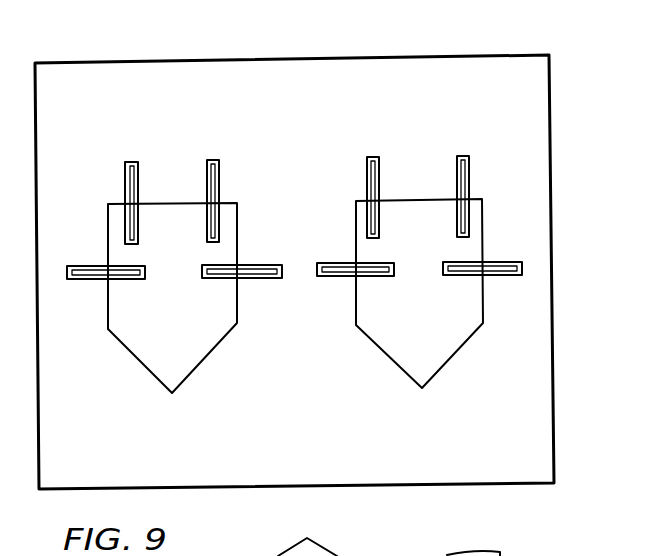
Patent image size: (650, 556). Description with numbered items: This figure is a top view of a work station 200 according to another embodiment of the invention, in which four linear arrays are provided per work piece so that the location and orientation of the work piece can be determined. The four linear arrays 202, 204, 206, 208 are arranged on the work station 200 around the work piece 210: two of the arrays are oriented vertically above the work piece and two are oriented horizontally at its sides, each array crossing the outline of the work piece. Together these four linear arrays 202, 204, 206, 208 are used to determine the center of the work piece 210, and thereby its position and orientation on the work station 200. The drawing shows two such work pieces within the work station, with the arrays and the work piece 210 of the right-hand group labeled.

The work station 200 is at (551, 117).
The linear array 202 is at (496, 262).
The linear array 204 is at (468, 158).
The linear array 206 is at (374, 157).
The linear array 208 is at (336, 263).
The work piece 210 is at (460, 353).